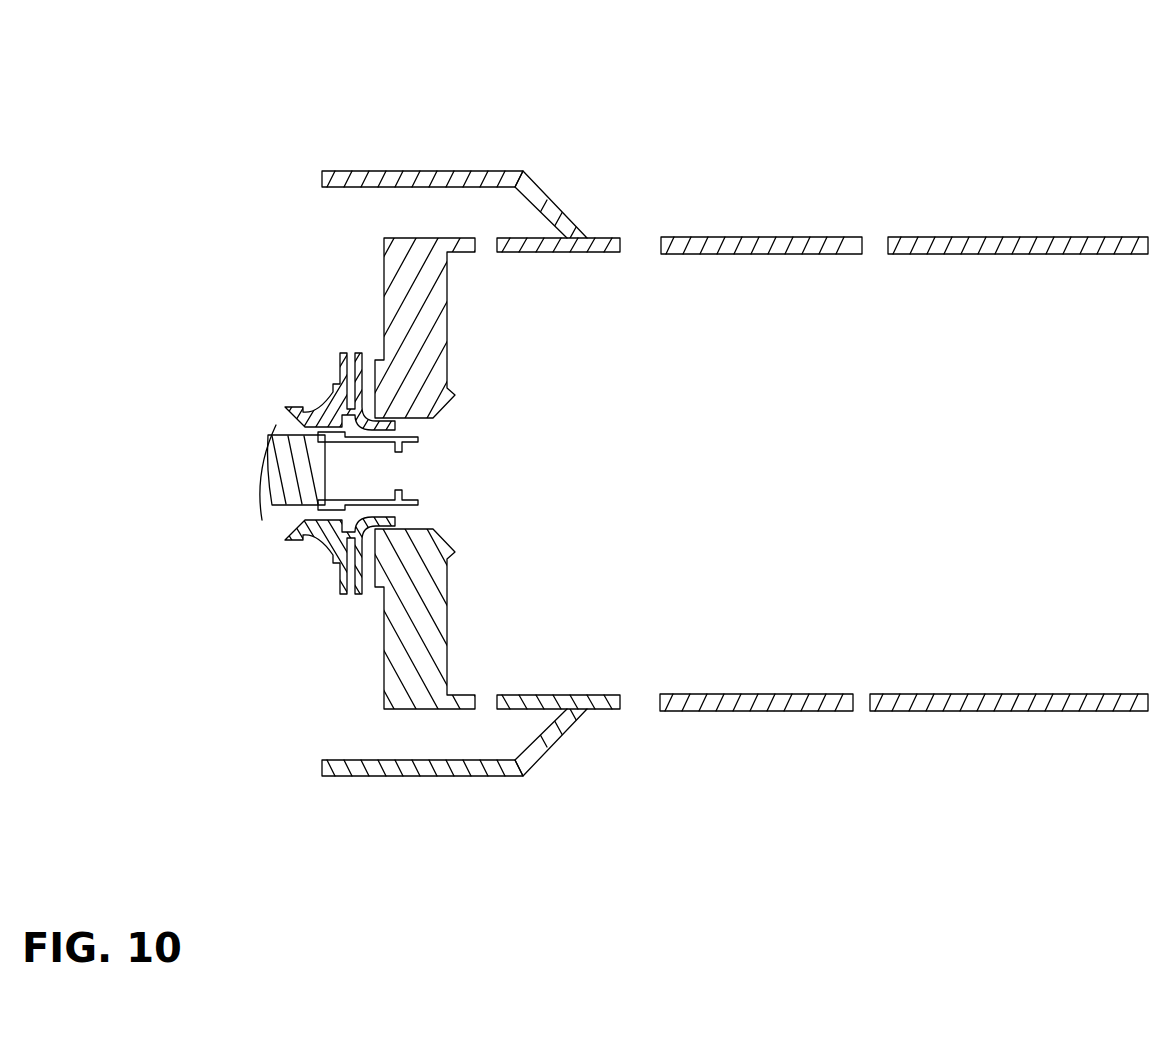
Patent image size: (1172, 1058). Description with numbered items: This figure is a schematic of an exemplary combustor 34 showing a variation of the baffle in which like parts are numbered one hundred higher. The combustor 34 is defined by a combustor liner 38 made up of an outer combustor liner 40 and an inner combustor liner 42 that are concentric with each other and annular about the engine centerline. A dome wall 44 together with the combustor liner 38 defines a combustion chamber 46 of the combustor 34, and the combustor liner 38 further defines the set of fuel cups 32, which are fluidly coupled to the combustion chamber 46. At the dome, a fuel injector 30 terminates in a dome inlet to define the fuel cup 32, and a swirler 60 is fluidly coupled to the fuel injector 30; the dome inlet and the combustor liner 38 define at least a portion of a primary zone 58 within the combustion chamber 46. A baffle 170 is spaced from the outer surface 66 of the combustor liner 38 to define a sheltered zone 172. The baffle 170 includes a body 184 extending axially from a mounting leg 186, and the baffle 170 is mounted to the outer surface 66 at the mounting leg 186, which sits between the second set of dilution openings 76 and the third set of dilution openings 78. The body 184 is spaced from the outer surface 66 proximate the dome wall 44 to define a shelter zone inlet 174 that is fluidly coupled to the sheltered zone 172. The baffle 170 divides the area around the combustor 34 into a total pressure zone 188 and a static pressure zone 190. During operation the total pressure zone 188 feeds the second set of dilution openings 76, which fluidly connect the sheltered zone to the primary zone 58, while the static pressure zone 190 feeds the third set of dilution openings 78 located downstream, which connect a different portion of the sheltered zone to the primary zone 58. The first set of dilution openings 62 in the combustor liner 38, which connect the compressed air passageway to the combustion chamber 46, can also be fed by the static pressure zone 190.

The fuel injector 30 is at (426, 514).
The fuel cup 32 is at (413, 491).
The combustor 34 is at (965, 137).
The combustor liner 38 is at (997, 238).
The outer combustor liner 40 is at (1048, 248).
The inner combustor liner 42 is at (933, 711).
The dome wall 44 is at (447, 335).
The combustion chamber 46 is at (896, 468).
The primary zone 58 is at (587, 478).
The swirler 60 is at (424, 430).
The first set of dilution openings 62 is at (877, 247).
The outer surface 66 is at (703, 711).
The second set of dilution openings 76 is at (488, 707).
The third set of dilution openings 78 is at (643, 245).
The baffle 170 is at (398, 171).
The sheltered zone 172 is at (395, 229).
The shelter zone inlet 174 is at (352, 217).
The body 184 is at (463, 180).
The mounting leg 186 is at (548, 208).
The total pressure zone 188 is at (387, 747).
The static pressure zone 190 is at (776, 140).